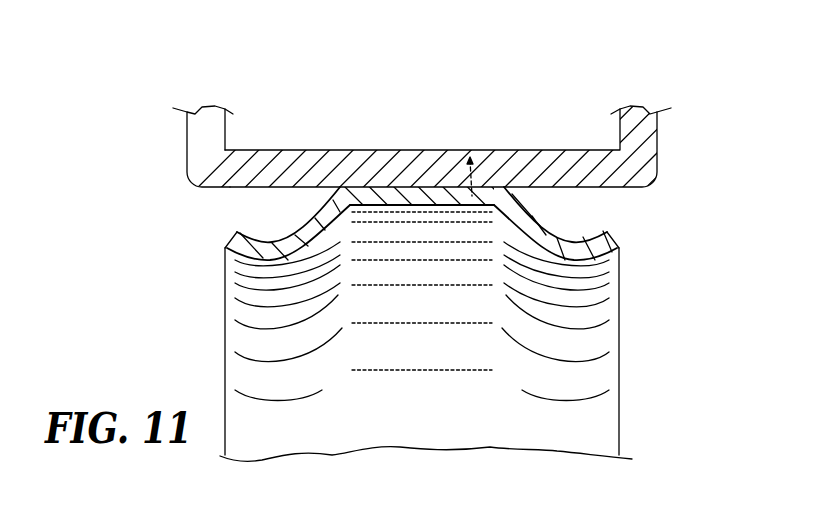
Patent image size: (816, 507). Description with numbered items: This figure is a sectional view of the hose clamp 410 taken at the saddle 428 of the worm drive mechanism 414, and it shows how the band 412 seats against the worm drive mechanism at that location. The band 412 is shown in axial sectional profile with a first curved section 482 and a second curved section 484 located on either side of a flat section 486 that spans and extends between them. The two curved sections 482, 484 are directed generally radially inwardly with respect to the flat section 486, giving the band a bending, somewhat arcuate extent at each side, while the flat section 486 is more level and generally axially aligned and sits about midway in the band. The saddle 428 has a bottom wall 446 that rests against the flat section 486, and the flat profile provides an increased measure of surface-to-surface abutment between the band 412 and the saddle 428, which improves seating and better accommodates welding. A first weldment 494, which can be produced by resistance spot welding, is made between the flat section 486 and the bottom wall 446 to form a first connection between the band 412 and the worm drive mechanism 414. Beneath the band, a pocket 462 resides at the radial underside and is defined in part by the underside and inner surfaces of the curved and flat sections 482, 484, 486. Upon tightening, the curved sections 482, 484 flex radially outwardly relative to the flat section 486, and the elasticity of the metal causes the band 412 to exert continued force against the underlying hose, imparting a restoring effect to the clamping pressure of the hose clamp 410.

The hose clamp 410 is at (580, 62).
The worm drive mechanism 414 is at (307, 151).
The saddle 428 is at (195, 176).
The first weldment 494 is at (374, 205).
The bottom wall 446 is at (502, 168).
The first curved section 482 is at (322, 218).
The second curved section 484 is at (536, 224).
The flat section 486 is at (440, 196).
The band 412 is at (620, 372).
The pocket 462 is at (440, 359).